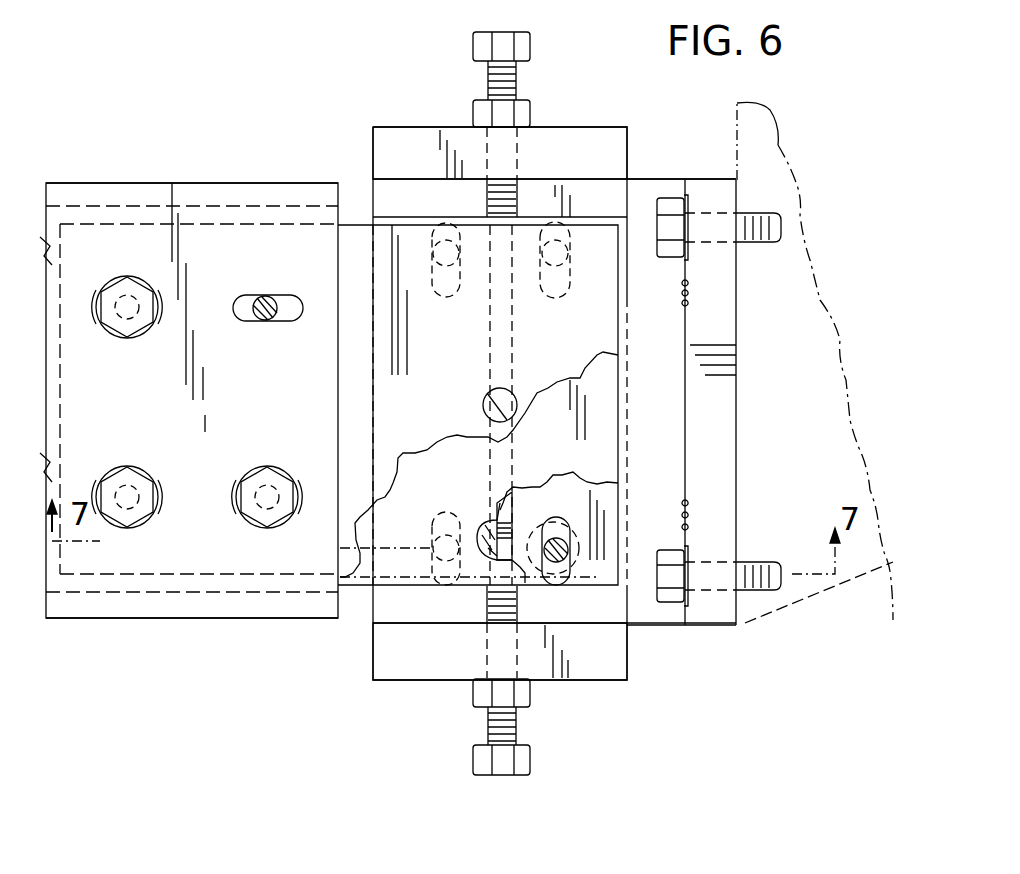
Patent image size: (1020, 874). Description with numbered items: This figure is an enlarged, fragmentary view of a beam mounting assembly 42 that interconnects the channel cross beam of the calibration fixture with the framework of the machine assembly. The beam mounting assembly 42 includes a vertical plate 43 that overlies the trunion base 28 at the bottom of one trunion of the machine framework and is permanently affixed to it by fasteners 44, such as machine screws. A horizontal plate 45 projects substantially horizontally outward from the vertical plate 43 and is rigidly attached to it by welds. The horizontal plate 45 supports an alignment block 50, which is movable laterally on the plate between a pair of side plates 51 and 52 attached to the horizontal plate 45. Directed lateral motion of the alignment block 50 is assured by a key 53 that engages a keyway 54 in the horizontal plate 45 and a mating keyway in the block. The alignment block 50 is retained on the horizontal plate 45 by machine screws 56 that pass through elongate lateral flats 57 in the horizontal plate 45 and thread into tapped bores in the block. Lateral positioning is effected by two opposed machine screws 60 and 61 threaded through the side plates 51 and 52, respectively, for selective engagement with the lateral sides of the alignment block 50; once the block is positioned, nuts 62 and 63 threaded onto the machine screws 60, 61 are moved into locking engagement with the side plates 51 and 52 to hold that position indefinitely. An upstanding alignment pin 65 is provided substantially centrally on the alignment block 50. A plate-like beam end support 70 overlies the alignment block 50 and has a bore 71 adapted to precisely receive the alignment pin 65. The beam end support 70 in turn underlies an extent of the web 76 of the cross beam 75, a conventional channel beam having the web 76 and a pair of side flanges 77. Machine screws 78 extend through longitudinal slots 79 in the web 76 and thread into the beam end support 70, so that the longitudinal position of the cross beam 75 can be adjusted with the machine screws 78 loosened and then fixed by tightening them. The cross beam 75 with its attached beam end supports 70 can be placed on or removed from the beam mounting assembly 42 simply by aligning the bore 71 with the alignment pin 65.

The trunion base 28 is at (825, 378).
The beam mounting assembly 42 is at (663, 628).
The vertical plate 43 is at (730, 408).
The fastener 44 is at (772, 217).
The horizontal plate 45 is at (647, 197).
The alignment block 50 is at (395, 580).
The side plate 51 is at (407, 668).
The side plate 52 is at (408, 147).
The key 53 is at (513, 493).
The keyway 54 is at (487, 512).
The machine screw 56 is at (447, 253).
The elongate lateral flat 57 is at (440, 287).
The machine screw 60 is at (502, 770).
The machine screw 61 is at (522, 43).
The nut 62 is at (478, 697).
The nut 63 is at (477, 110).
The alignment pin 65 is at (510, 397).
The beam end support 70 is at (592, 245).
The bore 71 is at (490, 397).
The cross beam 75 is at (202, 618).
The web 76 is at (160, 547).
The side flange 77 is at (195, 182).
The machine screw 78 is at (122, 282).
The longitudinal slot 79 is at (240, 313).